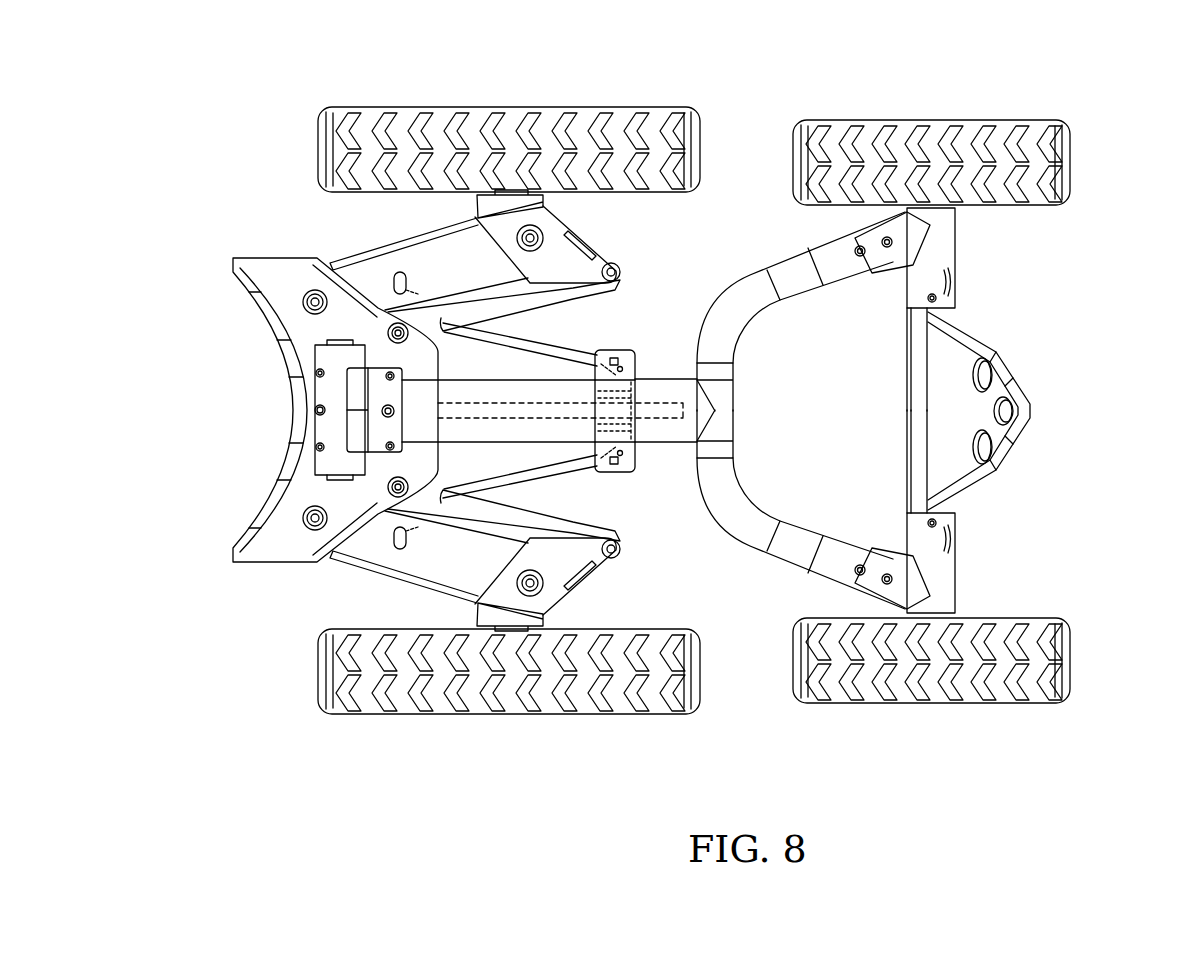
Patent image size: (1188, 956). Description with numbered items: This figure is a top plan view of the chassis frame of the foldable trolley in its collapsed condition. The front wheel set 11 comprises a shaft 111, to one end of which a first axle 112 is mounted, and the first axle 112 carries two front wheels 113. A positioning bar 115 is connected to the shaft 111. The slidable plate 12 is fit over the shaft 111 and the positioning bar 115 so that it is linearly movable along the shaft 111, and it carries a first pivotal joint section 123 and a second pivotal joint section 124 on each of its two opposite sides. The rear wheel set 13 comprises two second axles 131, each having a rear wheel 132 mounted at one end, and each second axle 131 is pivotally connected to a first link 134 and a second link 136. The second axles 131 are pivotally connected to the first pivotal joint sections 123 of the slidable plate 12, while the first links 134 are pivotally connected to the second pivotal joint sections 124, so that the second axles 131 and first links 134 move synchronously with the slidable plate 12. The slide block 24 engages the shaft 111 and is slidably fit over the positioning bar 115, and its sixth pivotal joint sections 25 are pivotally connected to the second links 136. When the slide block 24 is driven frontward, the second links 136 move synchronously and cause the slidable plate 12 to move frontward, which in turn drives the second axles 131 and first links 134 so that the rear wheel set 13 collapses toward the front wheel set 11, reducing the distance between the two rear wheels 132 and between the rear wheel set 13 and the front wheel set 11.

The front wheel set 11 is at (1091, 421).
The shaft 111 is at (703, 408).
The first axle 112 is at (947, 250).
The front wheels 113 is at (908, 165).
The positioning bar 115 is at (652, 413).
The slidable plate 12 is at (283, 538).
The first pivotal joint section 123 is at (307, 517).
The second pivotal joint section 124 is at (297, 470).
The rear wheel set 13 is at (239, 413).
The second axles 131 is at (432, 248).
The rear wheel 132 is at (528, 152).
The first link 134 is at (493, 310).
The second link 136 is at (438, 353).
The slide block 24 is at (641, 348).
The sixth pivotal joint section 25 is at (618, 357).